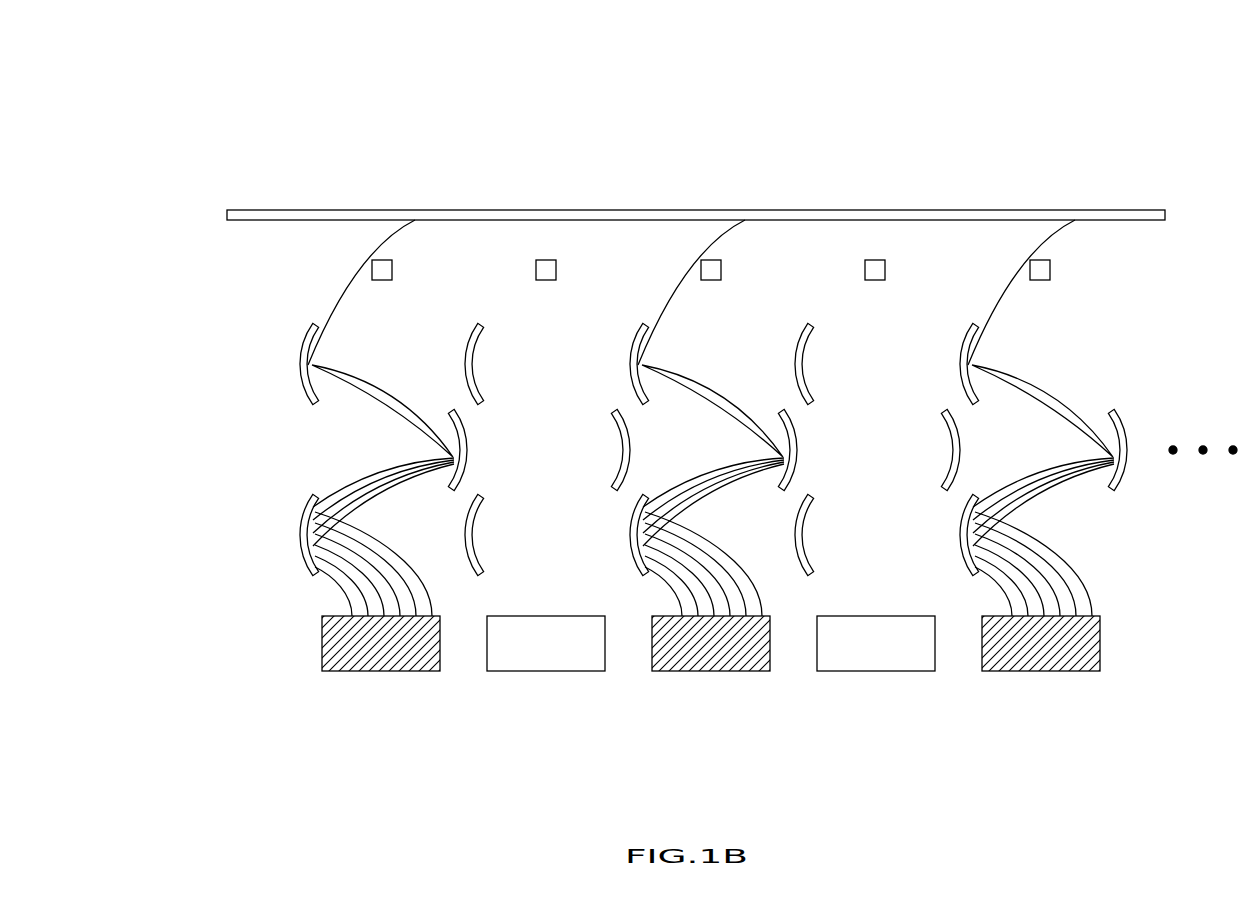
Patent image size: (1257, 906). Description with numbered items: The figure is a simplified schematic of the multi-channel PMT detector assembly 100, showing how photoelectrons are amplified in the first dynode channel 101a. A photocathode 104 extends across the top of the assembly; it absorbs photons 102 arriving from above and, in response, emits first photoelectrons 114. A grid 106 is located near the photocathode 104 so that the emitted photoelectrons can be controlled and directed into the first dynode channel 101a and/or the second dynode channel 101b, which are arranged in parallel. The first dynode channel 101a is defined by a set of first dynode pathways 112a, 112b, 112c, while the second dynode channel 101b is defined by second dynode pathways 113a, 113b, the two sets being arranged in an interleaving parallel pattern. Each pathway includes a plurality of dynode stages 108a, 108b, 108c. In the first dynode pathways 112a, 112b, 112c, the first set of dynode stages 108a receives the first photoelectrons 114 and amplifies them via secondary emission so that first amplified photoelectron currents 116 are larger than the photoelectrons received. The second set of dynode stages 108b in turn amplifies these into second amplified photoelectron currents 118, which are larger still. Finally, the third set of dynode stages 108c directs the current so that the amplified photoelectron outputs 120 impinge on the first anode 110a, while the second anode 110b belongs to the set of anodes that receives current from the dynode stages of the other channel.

The multi-channel PMT detector assembly 100 is at (184, 66).
The first dynode channel 101a is at (347, 236).
The second dynode channel 101b is at (538, 236).
The photons 102 is at (423, 206).
The photocathode 104 is at (240, 208).
The grid 106 is at (393, 268).
The first set of dynode stages 108a is at (308, 362).
The second set of dynode stages 108b is at (618, 452).
The third set of dynode stages 108c is at (308, 535).
The first anode 110a is at (375, 673).
The second anode 110b is at (545, 673).
The first dynode pathway 112a is at (445, 570).
The first dynode pathway 112b is at (777, 570).
The first dynode pathway 112c is at (1100, 570).
The second dynode pathway 113a is at (553, 570).
The second dynode pathway 113b is at (883, 570).
The first photoelectrons 114 is at (340, 298).
The first amplified photoelectron currents 116 is at (390, 388).
The second amplified photoelectron currents 118 is at (382, 470).
The amplified photoelectron outputs 120 is at (395, 545).